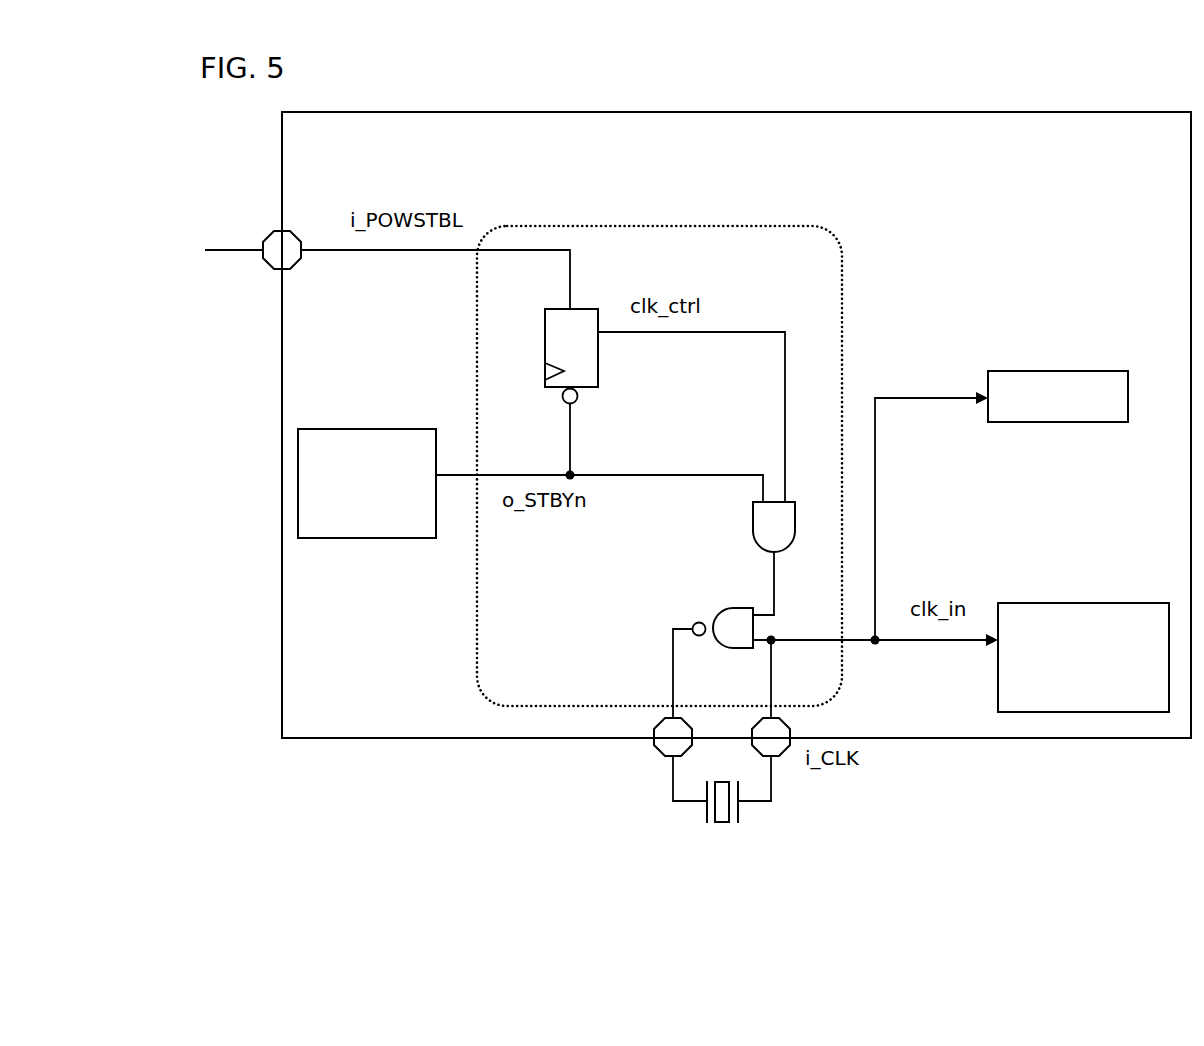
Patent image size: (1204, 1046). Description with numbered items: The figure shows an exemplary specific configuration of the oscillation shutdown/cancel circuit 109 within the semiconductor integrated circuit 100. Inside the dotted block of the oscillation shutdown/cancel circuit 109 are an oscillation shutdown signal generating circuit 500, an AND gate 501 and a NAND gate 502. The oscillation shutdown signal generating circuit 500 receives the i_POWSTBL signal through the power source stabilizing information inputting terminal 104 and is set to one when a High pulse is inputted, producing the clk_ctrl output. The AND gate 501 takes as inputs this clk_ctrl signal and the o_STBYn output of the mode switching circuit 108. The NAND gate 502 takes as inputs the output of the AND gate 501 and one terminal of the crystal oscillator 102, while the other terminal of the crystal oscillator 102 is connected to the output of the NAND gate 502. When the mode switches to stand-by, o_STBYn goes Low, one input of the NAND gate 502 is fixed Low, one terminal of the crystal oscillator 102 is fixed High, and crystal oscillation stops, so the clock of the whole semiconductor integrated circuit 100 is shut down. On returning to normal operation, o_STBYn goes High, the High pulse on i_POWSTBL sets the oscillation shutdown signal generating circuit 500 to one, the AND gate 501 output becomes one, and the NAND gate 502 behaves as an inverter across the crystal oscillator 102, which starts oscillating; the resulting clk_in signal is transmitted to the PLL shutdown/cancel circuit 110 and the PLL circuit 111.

The semiconductor integrated circuit 100 is at (370, 735).
The crystal oscillator 102 is at (697, 813).
The power source stabilizing information inputting terminal 104 is at (272, 267).
The mode switching circuit 108 is at (353, 538).
The oscillation shutdown/cancel circuit 109 is at (722, 223).
The PLL shutdown/cancel circuit 110 is at (1045, 602).
The PLL circuit 111 is at (1028, 371).
The oscillation shutdown signal generating circuit 500 is at (543, 325).
The AND gate 501 is at (767, 530).
The NAND gate 502 is at (713, 617).